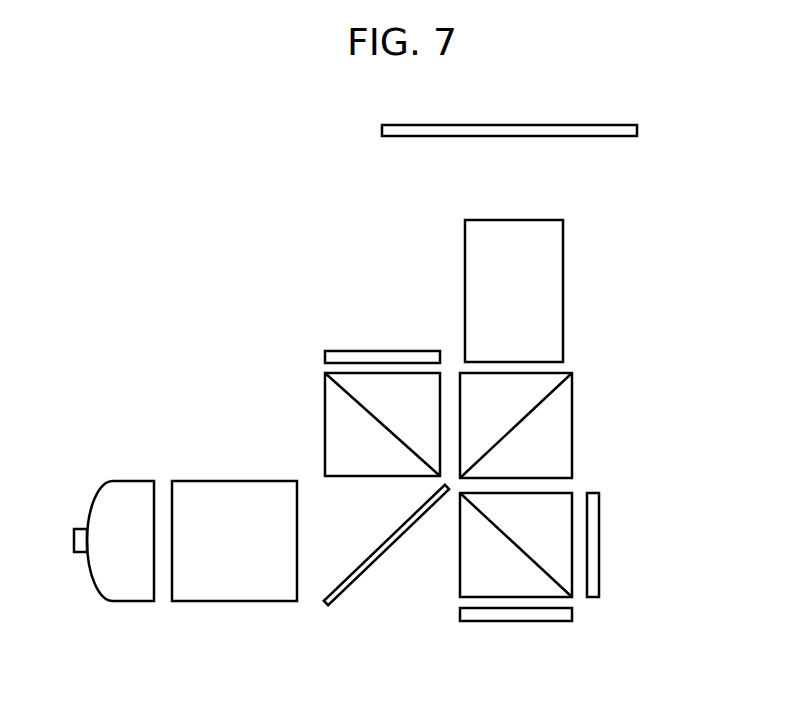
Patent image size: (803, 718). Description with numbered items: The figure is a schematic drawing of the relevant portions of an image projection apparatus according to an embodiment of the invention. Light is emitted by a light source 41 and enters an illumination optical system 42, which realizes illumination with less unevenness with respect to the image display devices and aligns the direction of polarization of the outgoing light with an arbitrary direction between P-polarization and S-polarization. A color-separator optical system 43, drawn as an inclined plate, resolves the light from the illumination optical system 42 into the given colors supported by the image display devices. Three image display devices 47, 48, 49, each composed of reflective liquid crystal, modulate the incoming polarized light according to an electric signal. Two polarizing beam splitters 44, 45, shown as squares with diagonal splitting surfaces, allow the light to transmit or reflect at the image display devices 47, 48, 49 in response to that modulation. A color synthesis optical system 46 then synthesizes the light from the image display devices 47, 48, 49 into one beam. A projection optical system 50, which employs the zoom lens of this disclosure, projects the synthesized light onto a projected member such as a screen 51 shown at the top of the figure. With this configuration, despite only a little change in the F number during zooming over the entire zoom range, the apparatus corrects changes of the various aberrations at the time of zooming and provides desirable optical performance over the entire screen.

The light source 41 is at (103, 505).
The illumination optical system 42 is at (231, 593).
The color-separator optical system 43 is at (340, 595).
The polarizing beam splitter 44 is at (334, 417).
The polarizing beam splitter 45 is at (475, 570).
The color synthesis optical system 46 is at (565, 430).
The image display device 47 is at (375, 357).
The image display device 48 is at (510, 615).
The image display device 49 is at (597, 548).
The projection optical system 50 is at (555, 298).
The screen 51 is at (637, 131).